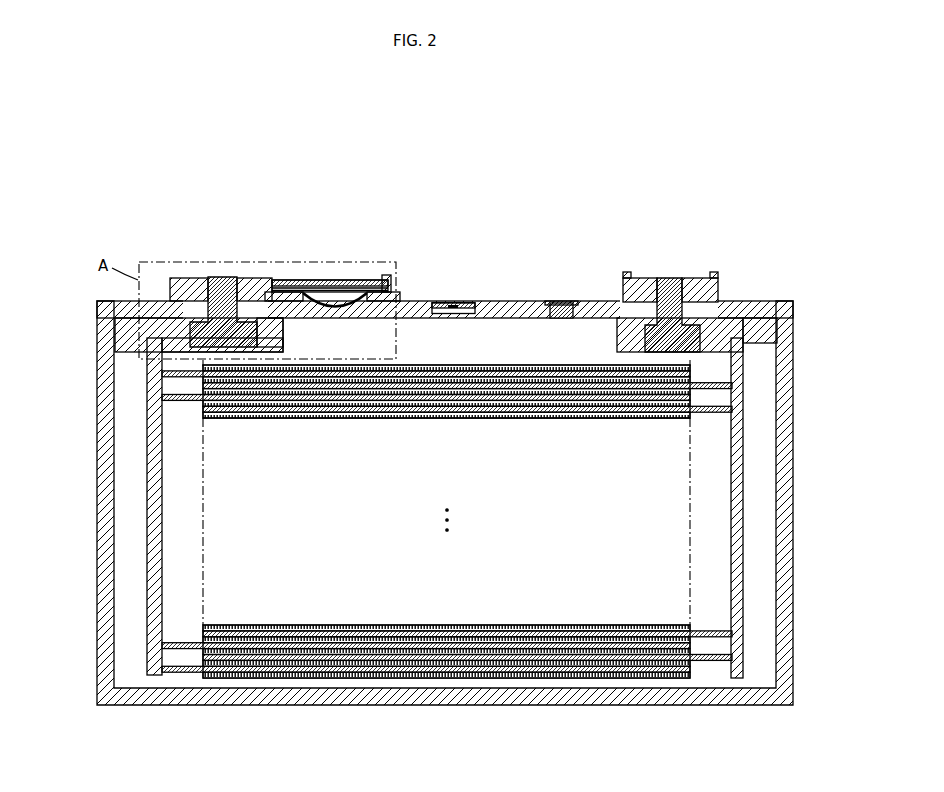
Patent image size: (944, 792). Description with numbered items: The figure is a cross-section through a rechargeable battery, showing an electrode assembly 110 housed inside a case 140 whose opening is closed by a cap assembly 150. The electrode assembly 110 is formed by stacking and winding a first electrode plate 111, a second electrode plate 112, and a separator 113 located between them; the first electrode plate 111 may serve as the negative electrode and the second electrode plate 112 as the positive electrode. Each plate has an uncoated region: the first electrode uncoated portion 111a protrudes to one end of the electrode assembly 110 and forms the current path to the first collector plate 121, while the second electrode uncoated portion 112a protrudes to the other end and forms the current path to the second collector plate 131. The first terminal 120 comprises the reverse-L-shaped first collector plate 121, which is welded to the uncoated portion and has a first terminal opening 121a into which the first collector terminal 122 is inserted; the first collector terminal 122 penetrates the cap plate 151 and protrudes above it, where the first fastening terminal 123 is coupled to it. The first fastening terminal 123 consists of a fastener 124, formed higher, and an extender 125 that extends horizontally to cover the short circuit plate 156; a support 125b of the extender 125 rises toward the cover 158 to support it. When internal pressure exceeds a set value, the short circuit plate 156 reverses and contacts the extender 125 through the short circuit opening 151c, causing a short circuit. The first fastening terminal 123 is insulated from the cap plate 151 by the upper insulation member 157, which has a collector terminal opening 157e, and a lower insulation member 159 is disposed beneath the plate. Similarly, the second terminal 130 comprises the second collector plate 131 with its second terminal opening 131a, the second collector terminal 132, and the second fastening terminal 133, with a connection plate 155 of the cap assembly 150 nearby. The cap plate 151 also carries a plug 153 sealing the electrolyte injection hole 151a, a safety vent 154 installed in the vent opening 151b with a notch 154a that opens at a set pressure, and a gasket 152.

The electrode assembly 110 is at (447, 560).
The first electrode plate 111 is at (426, 565).
The first electrode uncoated portion 111a is at (180, 673).
The second electrode plate 112 is at (467, 571).
The second electrode uncoated portion 112a is at (712, 667).
The separator 113 is at (462, 661).
The first terminal 120 is at (433, 412).
The first collector plate 121 is at (150, 442).
The first terminal opening 121a is at (215, 352).
The first collector terminal 122 is at (215, 277).
The first fastening terminal 123 is at (287, 240).
The fastener 124 is at (250, 277).
The first extender 125 is at (320, 245).
The support 125b is at (357, 286).
The second terminal 130 is at (737, 433).
The second collector plate 131 is at (737, 451).
The second terminal opening 131a is at (680, 356).
The second collector terminal 132 is at (677, 280).
The second fastening terminal 133 is at (700, 277).
The case 140 is at (788, 483).
The cap assembly 150 is at (438, 414).
The cap plate 151 is at (445, 305).
The electrolyte injection hole 151a is at (563, 320).
The vent opening 151b is at (448, 319).
The short circuit opening 151c is at (362, 320).
The gasket 152 is at (242, 420).
The plug 153 is at (560, 304).
The safety vent 154 is at (452, 279).
The notch 154a is at (445, 304).
The connection plate 155 is at (647, 278).
The short circuit plate 156 is at (343, 305).
The upper insulation member 157 is at (338, 279).
The collector terminal opening 157e is at (282, 328).
The cover 158 is at (320, 286).
The lower insulation member 159 is at (118, 332).